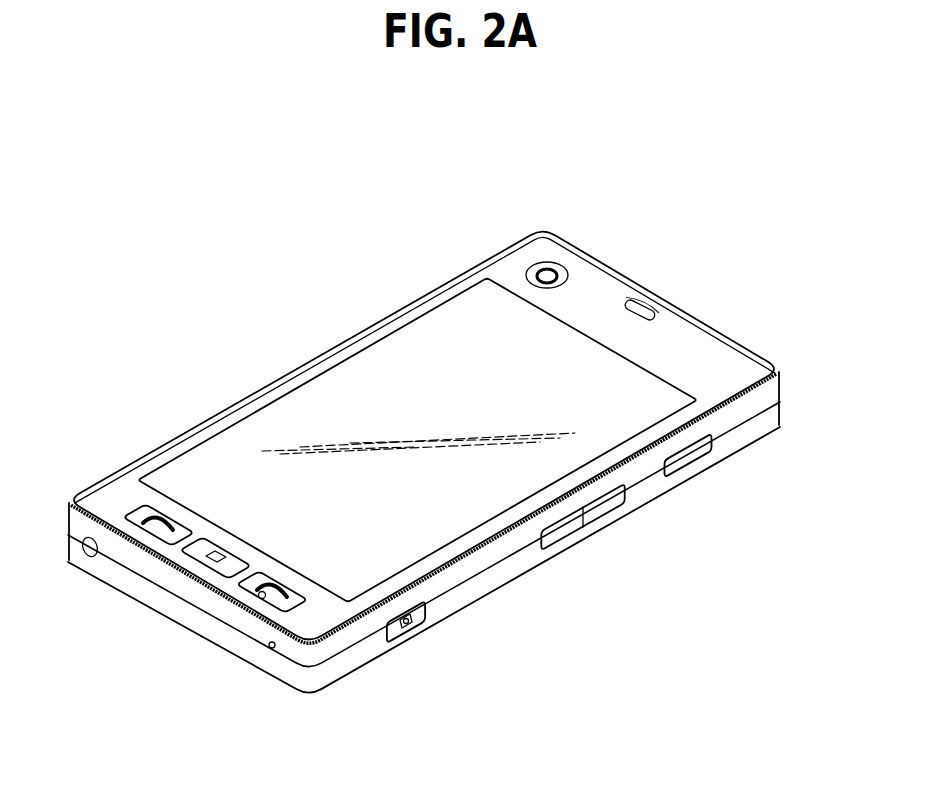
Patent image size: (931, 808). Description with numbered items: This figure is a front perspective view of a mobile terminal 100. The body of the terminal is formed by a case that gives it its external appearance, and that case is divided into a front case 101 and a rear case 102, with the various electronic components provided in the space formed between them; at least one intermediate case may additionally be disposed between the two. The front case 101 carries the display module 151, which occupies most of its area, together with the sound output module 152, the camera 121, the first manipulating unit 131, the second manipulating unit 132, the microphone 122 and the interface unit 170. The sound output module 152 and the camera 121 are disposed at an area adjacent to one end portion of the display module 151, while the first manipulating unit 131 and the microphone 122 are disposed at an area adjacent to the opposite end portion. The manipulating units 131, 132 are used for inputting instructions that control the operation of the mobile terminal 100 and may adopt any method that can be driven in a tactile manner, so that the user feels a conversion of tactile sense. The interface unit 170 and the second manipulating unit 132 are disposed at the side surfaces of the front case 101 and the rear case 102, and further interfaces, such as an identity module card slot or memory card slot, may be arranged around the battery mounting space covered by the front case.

The mobile terminal 100 is at (386, 293).
The front case 101 is at (776, 390).
The rear case 102 is at (776, 418).
The camera 121 is at (553, 272).
The microphone 122 is at (268, 648).
The first manipulating unit 131 is at (140, 518).
The second manipulating unit 132 is at (563, 530).
The display module 151 is at (312, 392).
The sound output module 152 is at (645, 310).
The interface unit 170 is at (688, 458).